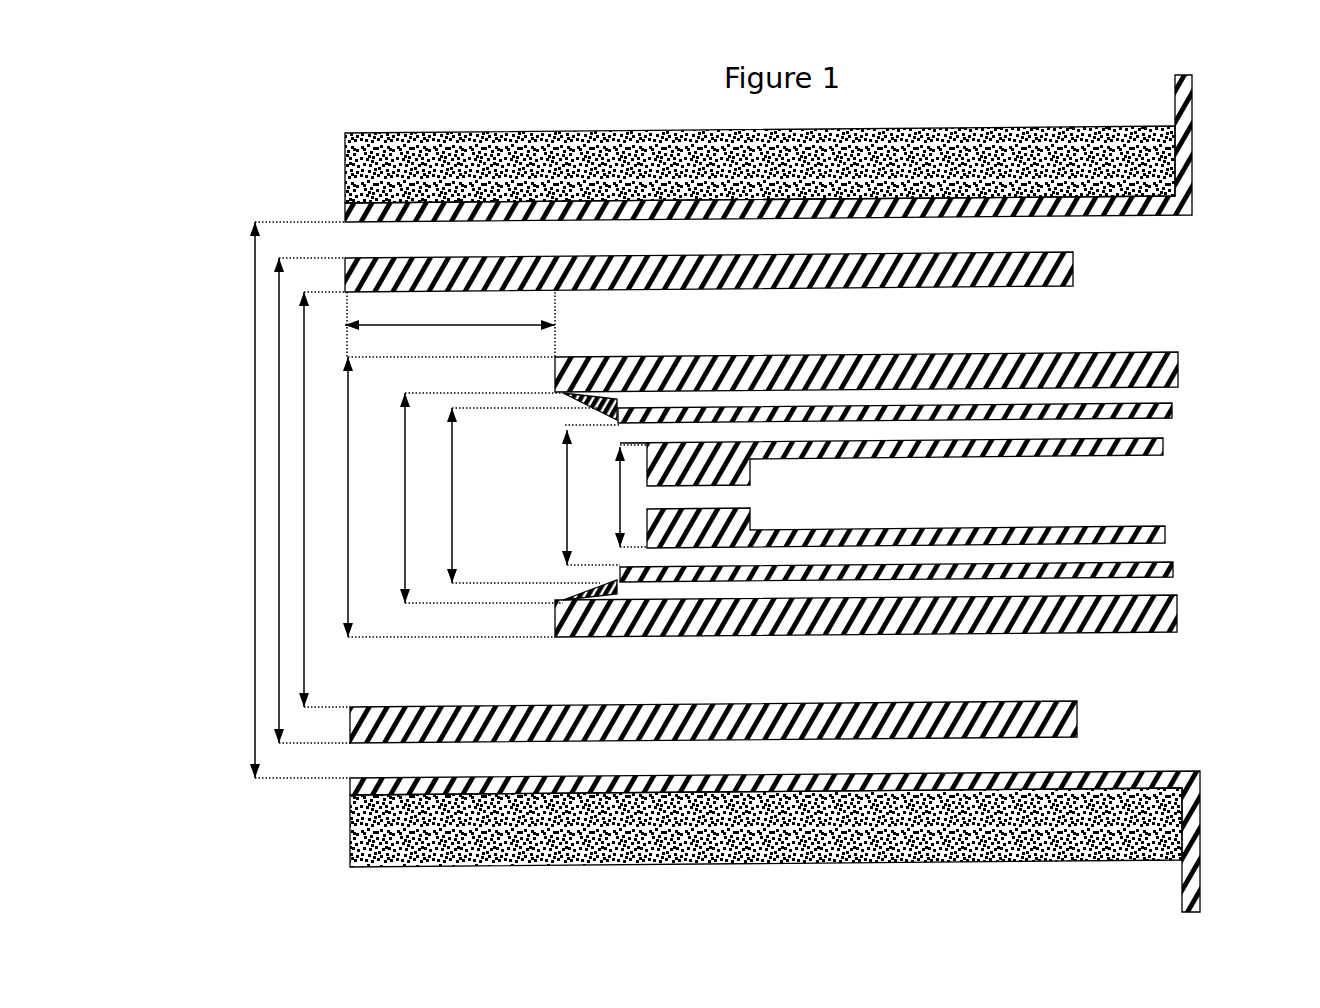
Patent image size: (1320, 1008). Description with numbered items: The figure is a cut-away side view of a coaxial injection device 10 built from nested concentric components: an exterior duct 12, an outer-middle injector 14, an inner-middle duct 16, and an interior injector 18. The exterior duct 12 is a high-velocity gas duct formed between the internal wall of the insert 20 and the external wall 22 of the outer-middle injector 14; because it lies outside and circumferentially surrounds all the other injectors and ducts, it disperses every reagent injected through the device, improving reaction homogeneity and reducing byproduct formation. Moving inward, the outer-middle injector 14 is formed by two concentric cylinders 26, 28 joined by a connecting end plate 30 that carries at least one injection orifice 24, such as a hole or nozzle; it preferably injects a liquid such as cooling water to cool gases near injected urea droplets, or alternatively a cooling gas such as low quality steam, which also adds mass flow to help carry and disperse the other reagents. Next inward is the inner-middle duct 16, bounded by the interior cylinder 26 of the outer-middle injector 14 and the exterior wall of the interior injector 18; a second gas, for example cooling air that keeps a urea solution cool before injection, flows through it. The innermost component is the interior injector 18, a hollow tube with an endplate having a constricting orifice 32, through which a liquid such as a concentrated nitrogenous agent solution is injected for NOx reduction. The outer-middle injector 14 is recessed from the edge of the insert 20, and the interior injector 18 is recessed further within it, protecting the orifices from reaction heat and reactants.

The coaxial injection device 10 is at (266, 116).
The exterior duct 12 is at (544, 324).
The outer-middle injector 14 is at (1178, 395).
The inner-middle duct 16 is at (1155, 430).
The interior injector 18 is at (1165, 533).
The insert 20 is at (1073, 268).
The external wall 22 is at (1178, 368).
The injection orifice 24 is at (602, 417).
The interior cylinder 26 is at (1173, 570).
The exterior cylinder 28 is at (1177, 613).
The connecting end plate 30 is at (606, 495).
The constricting orifice 32 is at (740, 493).